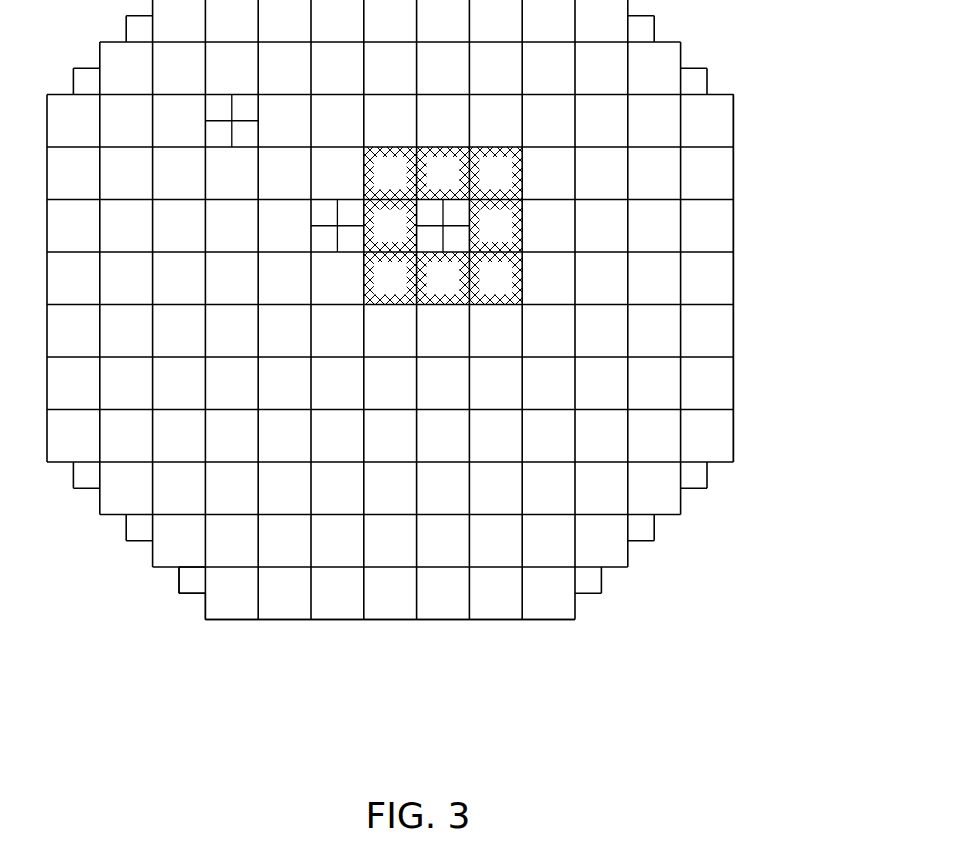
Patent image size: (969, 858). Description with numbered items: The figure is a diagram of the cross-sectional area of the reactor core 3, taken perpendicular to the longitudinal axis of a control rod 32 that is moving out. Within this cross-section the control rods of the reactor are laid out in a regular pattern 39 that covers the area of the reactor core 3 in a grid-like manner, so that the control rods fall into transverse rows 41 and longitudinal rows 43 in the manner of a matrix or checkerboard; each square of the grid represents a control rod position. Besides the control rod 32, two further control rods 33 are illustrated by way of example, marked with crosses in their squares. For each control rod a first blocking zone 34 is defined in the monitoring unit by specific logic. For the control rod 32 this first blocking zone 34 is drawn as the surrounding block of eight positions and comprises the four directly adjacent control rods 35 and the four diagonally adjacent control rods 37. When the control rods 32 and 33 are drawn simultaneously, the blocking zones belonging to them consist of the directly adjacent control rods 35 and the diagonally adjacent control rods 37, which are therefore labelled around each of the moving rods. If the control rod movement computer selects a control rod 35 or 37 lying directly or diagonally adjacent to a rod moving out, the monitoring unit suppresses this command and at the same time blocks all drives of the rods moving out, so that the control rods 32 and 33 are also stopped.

The reactor core 3 is at (660, 544).
The control rod 32 is at (437, 228).
The further control rods 33 is at (326, 228).
The first blocking zone 34 is at (497, 304).
The directly adjacent control rods 35 is at (338, 174).
The diagonally adjacent control rods 37 is at (338, 174).
The regular pattern 39 is at (440, 620).
The transverse rows 41 is at (283, 630).
The longitudinal rows 43 is at (748, 320).